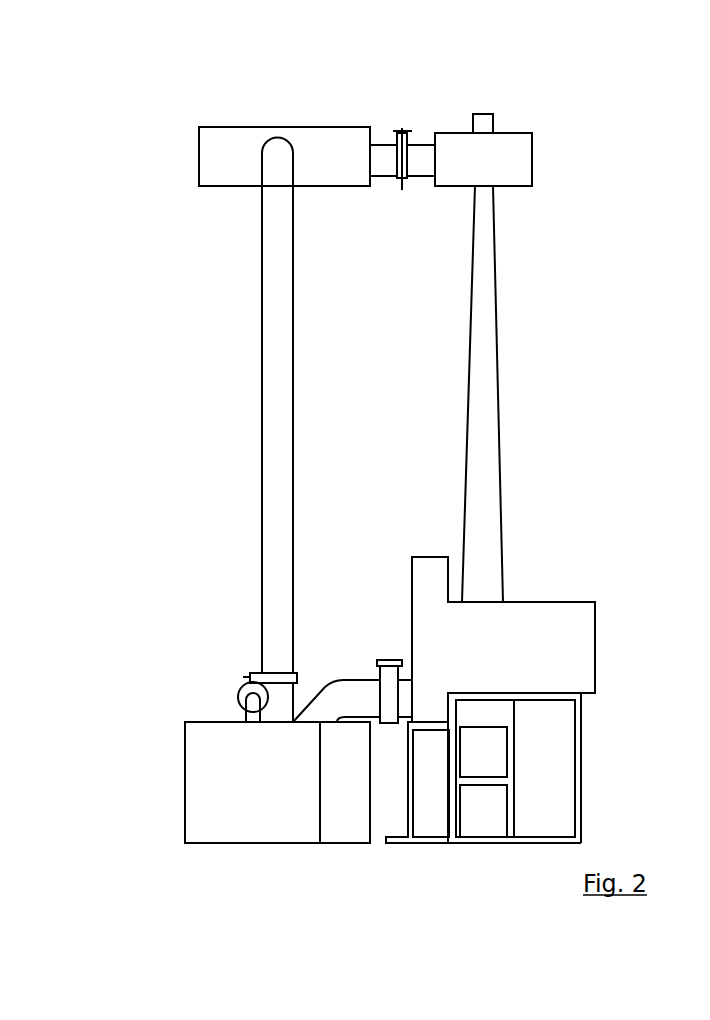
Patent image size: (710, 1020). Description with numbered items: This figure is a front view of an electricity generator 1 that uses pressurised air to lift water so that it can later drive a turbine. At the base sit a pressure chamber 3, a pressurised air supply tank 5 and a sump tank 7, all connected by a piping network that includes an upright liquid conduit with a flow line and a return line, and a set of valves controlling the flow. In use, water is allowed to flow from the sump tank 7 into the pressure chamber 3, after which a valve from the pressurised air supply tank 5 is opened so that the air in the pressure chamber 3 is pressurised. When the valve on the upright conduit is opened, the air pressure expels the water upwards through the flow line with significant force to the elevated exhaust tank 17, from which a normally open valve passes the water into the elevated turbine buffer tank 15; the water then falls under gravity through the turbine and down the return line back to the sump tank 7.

The electricity generator 1 is at (174, 120).
The pressure chamber 3 is at (355, 783).
The pressurised air supply tank 5 is at (197, 770).
The sump tank 7 is at (573, 640).
The elevated turbine buffer tank 15 is at (526, 138).
The elevated exhaust tank 17 is at (320, 140).